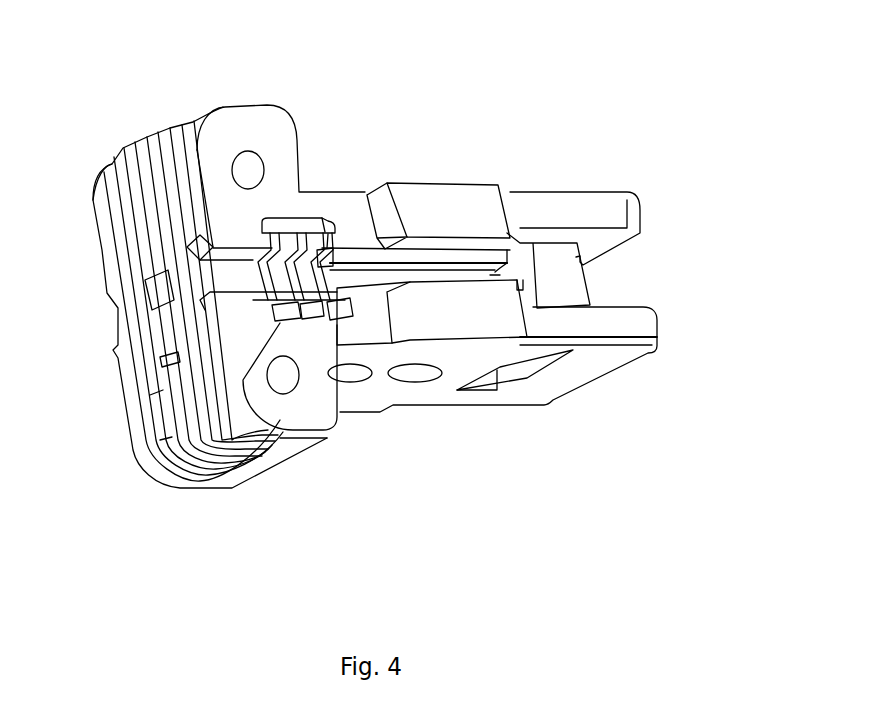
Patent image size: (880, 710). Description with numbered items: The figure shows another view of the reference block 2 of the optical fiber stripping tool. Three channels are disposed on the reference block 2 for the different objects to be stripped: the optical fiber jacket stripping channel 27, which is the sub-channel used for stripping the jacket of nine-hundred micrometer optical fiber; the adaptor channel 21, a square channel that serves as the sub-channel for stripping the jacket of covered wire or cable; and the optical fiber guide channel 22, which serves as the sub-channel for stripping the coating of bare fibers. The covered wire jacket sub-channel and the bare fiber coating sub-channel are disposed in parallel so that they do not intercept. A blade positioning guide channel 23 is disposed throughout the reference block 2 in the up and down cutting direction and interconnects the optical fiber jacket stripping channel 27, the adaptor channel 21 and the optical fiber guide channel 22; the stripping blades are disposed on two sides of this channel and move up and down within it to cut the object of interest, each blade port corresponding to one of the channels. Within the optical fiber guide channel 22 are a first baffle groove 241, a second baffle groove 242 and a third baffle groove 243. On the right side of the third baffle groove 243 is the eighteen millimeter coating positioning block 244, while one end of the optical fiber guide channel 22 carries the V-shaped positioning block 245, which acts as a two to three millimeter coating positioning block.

The reference block 2 is at (610, 325).
The adaptor channel 21 is at (167, 300).
The optical fiber guide channel 22 is at (230, 273).
The blade positioning guide channel 23 is at (505, 372).
The optical fiber jacket stripping channel 27 is at (115, 326).
The first baffle groove 241 is at (285, 318).
The second baffle groove 242 is at (301, 325).
The third baffle groove 243 is at (343, 330).
The 18 mm coating positioning block 244 is at (325, 218).
The V-shaped positioning block 245 is at (495, 272).